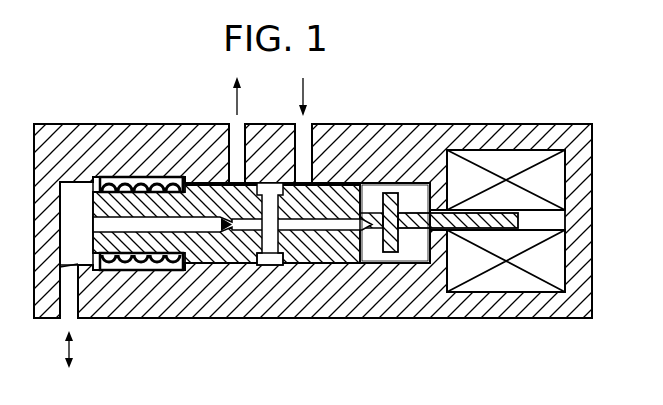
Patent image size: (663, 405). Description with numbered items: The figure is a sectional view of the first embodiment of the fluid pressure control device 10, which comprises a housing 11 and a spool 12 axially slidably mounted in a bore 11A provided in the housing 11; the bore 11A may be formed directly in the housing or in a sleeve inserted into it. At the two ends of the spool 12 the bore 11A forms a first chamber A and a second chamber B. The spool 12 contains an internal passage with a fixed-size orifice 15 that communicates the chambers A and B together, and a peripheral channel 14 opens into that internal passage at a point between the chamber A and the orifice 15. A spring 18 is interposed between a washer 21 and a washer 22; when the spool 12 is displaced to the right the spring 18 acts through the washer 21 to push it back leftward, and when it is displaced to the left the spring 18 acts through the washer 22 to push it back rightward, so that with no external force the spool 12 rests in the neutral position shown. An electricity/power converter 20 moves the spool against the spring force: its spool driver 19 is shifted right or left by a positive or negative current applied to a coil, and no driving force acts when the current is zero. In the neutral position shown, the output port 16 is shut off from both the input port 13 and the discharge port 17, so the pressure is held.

The fluid pressure control device 10 is at (573, 122).
The housing 11 is at (49, 124).
The bore 11A is at (383, 183).
The spool 12 is at (330, 265).
The input port 13 is at (310, 127).
The peripheral channel 14 is at (273, 258).
The fixed-size orifice 15 is at (257, 255).
The output port 16 is at (80, 316).
The discharge port 17 is at (232, 127).
The spring 18 is at (180, 270).
The spool driver 19 is at (482, 212).
The electricity/power converter 20 is at (516, 157).
The washer 21 is at (104, 177).
The washer 22 is at (177, 177).
The first chamber A is at (412, 250).
The second chamber B is at (80, 243).